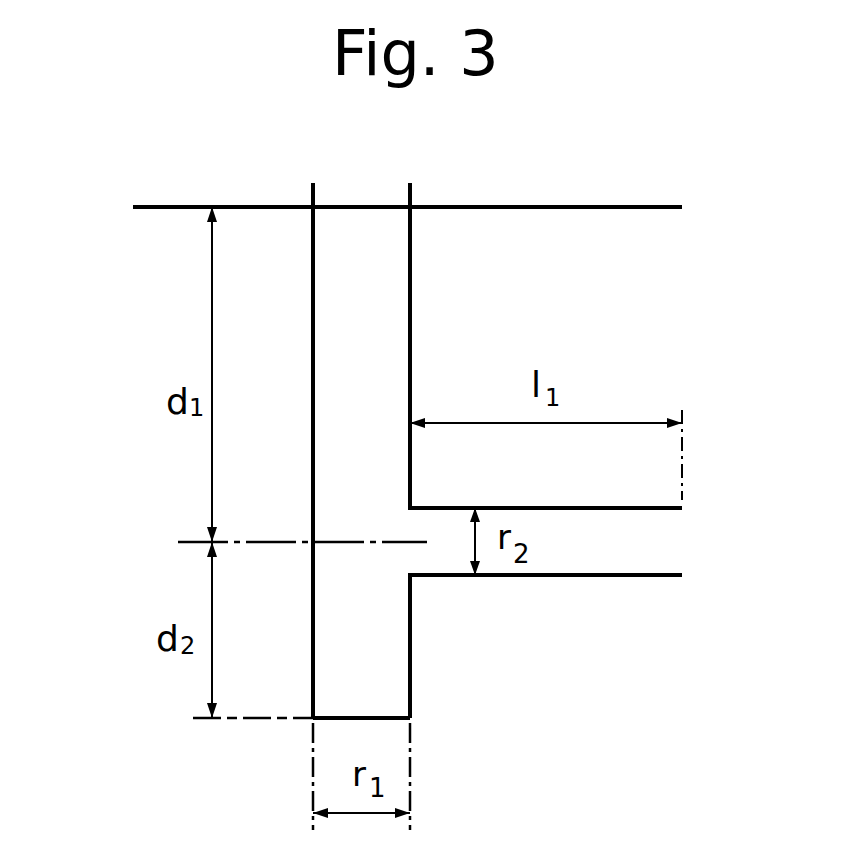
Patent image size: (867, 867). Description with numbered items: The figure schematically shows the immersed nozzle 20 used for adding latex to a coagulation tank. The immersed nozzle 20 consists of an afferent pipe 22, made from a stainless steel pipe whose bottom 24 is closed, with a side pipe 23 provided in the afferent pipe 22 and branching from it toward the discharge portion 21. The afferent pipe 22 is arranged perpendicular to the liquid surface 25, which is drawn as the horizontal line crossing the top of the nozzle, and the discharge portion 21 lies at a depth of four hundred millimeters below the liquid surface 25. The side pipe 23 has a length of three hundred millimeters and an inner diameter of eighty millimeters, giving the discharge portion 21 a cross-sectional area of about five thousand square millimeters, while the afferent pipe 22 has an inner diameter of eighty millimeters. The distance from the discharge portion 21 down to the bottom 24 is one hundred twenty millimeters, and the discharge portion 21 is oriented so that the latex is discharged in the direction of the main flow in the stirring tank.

The immersed nozzle 20 is at (155, 457).
The discharge portion 21 is at (678, 538).
The afferent pipe 22 is at (410, 337).
The side pipe 23 is at (613, 577).
The bottom 24 is at (382, 718).
The liquid surface 25 is at (532, 207).